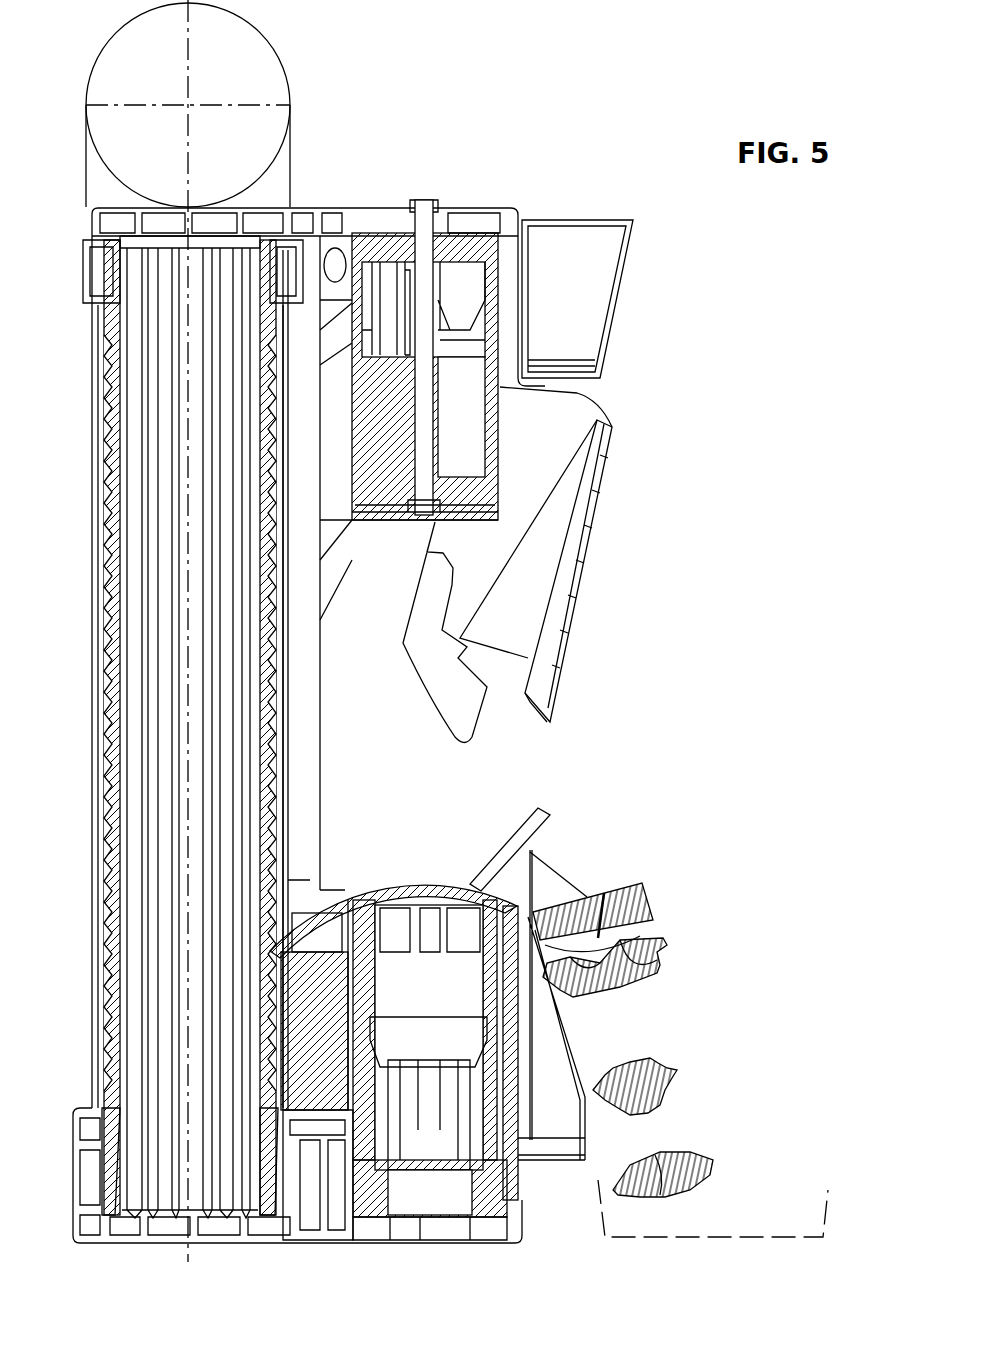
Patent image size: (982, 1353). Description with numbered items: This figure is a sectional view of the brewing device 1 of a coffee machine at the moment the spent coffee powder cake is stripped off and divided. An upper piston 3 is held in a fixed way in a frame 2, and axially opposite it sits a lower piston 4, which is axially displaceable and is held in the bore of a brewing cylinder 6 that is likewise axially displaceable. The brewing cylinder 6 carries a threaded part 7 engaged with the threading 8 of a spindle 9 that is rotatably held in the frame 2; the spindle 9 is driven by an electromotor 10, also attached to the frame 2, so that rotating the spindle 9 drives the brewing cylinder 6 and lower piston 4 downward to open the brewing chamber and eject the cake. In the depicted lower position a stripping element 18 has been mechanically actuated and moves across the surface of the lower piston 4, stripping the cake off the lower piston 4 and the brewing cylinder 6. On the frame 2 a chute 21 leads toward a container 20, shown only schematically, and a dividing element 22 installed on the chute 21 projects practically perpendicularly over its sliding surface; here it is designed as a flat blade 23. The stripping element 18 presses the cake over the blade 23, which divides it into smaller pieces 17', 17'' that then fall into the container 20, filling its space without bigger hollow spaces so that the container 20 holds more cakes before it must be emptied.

The brewing device 1 is at (672, 312).
The frame 2 is at (358, 208).
The upper piston 3 is at (475, 422).
The lower piston 4 is at (392, 970).
The brewing cylinder 6 is at (583, 1127).
The threaded part 7 is at (285, 1055).
The threading 8 is at (100, 548).
The spindle 9 is at (180, 806).
The electromotor 10 is at (130, 60).
The smaller piece of coffee powder cake 17' is at (659, 967).
The smaller piece of coffee powder cake 17'' is at (680, 1085).
The stripping element 18 is at (515, 848).
The container 20 is at (840, 1190).
The chute 21 is at (578, 1045).
The dividing element 22 is at (613, 893).
The flat blade 23 is at (653, 927).